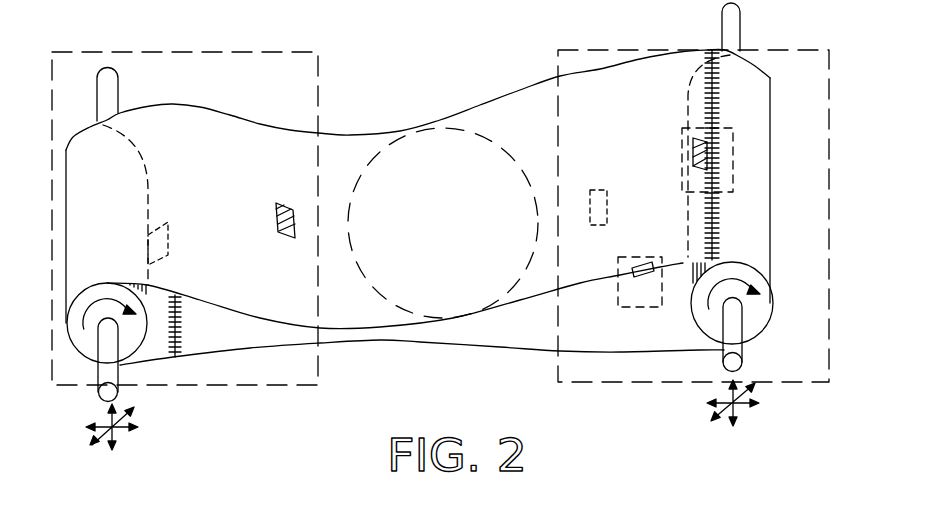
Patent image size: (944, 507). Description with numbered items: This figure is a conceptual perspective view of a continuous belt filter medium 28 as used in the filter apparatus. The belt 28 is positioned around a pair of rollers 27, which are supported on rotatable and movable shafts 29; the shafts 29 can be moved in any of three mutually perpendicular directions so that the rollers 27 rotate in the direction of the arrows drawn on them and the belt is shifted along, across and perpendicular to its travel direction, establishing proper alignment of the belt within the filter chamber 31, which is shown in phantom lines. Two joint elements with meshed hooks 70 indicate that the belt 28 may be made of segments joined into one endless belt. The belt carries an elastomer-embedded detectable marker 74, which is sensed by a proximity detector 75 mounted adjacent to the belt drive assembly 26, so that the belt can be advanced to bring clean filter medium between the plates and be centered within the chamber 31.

The belt drive assembly 26 is at (273, 385).
The rollers 27 is at (90, 342).
The continuous belt filter medium 28 is at (222, 155).
The shafts 29 is at (118, 388).
The filter chamber 31 is at (503, 133).
The meshed hooks 70 is at (175, 318).
The detectable marker 74 is at (168, 236).
The proximity detector 75 is at (735, 165).